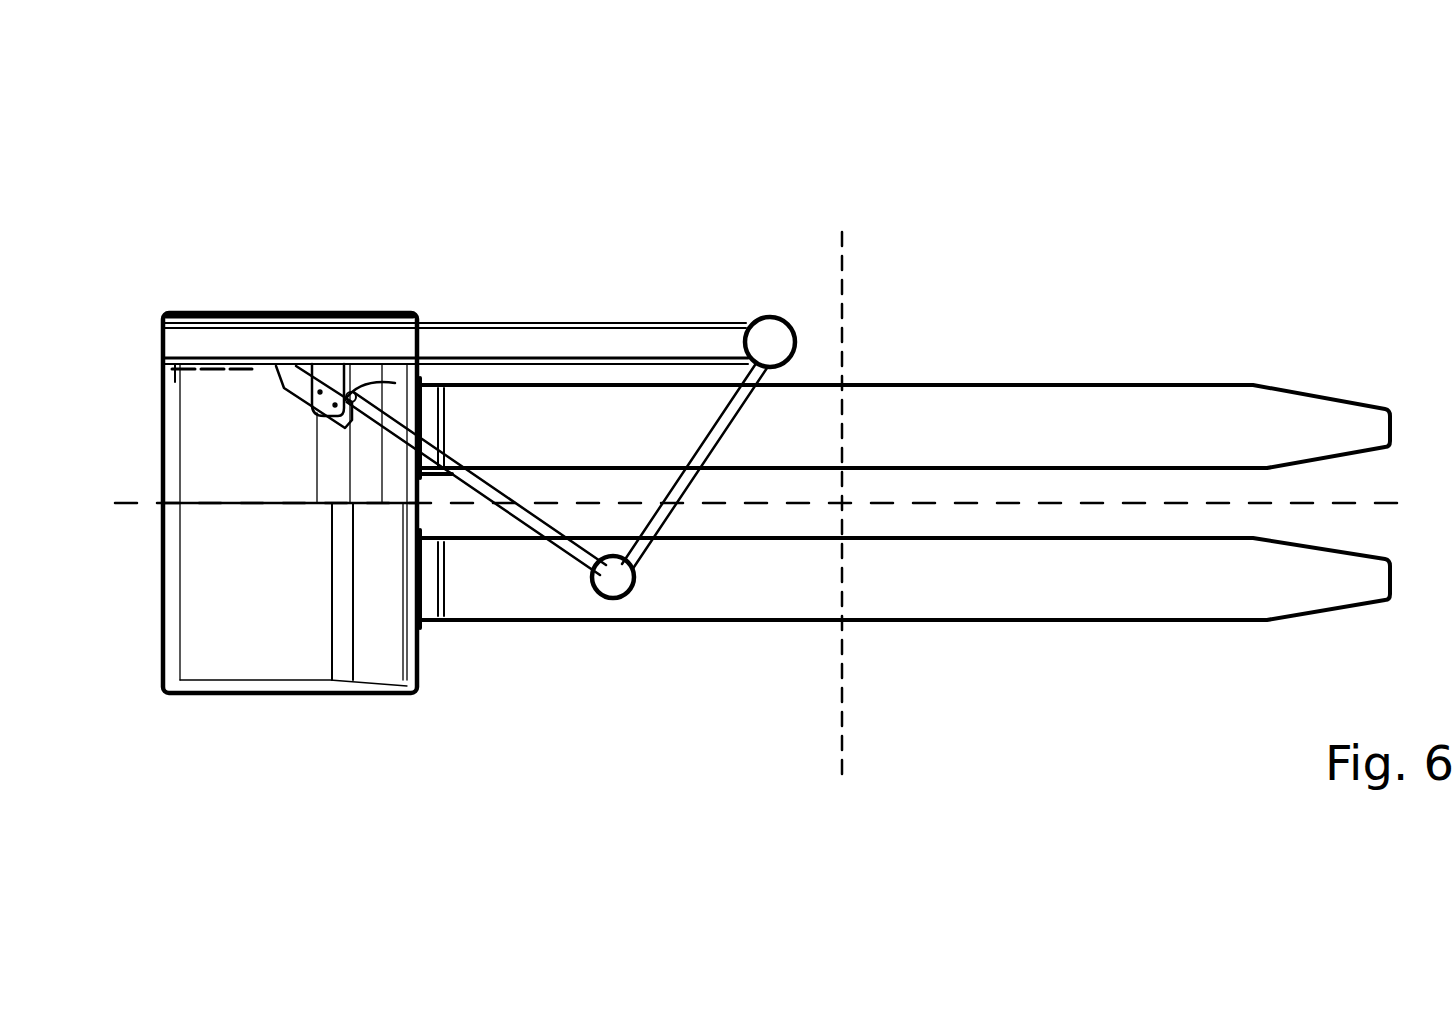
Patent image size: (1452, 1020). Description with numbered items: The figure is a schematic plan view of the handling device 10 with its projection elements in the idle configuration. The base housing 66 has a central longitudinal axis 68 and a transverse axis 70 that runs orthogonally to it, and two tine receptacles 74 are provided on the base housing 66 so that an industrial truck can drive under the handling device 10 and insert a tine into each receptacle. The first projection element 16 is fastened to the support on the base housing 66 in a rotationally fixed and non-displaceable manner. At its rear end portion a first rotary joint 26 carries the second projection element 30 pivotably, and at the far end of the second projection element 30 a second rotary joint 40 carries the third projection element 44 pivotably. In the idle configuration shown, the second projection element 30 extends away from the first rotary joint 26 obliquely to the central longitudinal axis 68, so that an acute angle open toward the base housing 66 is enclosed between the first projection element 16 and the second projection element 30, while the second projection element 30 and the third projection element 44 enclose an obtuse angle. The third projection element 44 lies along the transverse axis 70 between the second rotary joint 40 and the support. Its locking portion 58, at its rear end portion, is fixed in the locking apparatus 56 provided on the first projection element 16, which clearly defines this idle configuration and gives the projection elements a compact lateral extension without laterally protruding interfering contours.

The handling device 10 is at (168, 133).
The first projection element 16 is at (474, 350).
The first rotary joint 26 is at (766, 338).
The second projection element 30 is at (720, 418).
The second rotary joint 40 is at (599, 632).
The third projection element 44 is at (530, 532).
The locking apparatus 56 is at (318, 383).
The locking portion 58 is at (358, 383).
The base housing 66 is at (275, 657).
The central longitudinal axis 68 is at (1405, 503).
The transverse axis 70 is at (845, 240).
The tine receptacles 74 is at (1208, 598).